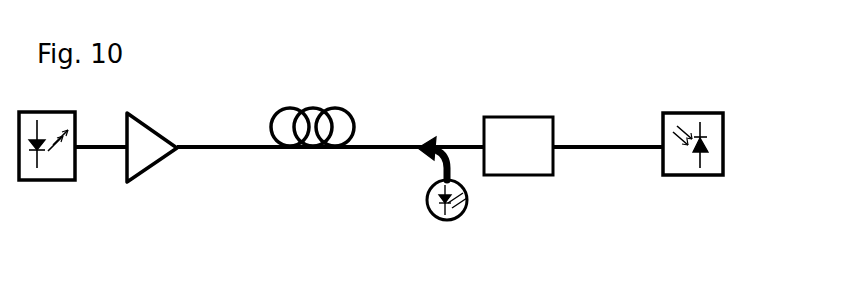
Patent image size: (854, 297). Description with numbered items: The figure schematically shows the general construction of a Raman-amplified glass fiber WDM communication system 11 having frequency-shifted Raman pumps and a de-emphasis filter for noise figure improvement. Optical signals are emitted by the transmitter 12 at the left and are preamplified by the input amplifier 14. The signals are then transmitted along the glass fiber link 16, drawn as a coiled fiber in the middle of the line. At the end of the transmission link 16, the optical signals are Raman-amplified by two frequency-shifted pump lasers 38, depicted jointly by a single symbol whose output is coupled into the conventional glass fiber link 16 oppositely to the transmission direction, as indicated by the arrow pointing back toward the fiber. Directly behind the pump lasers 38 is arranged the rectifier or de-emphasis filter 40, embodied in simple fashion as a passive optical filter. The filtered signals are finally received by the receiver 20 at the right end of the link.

The Raman-amplified WDM system 11 is at (475, 82).
The transmitter 12 is at (48, 182).
The input amplifier 14 is at (143, 173).
The glass fiber link 16 is at (313, 148).
The receiver 20 is at (690, 176).
The pump lasers 38 is at (447, 221).
The de-emphasis filter 40 is at (517, 176).